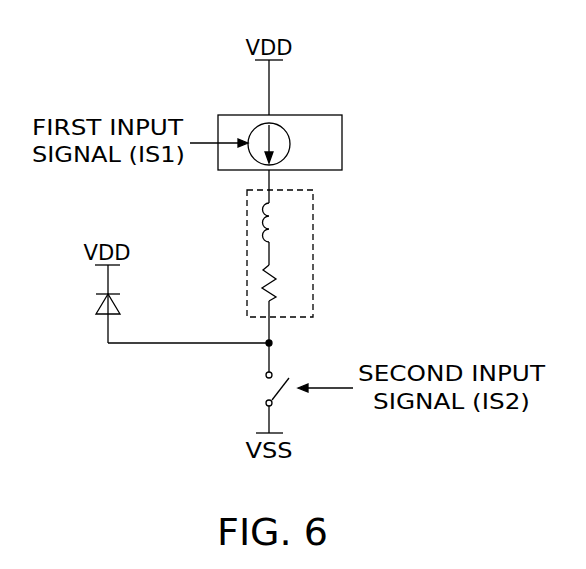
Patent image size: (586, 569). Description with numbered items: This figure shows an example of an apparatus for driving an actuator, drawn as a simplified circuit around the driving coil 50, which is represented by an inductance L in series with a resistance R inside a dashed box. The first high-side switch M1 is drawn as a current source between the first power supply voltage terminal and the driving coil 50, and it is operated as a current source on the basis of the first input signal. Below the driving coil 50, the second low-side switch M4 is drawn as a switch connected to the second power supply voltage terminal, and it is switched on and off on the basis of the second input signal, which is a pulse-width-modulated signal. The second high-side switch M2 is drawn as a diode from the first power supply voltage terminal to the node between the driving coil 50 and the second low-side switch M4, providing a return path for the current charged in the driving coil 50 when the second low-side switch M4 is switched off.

The first high-side switch M1 is at (280, 142).
The second high-side switch M2 is at (88, 304).
The second low-side switch M4 is at (258, 389).
The inductor L is at (280, 222).
The resistor R is at (280, 283).
The driving coil 50 is at (313, 252).